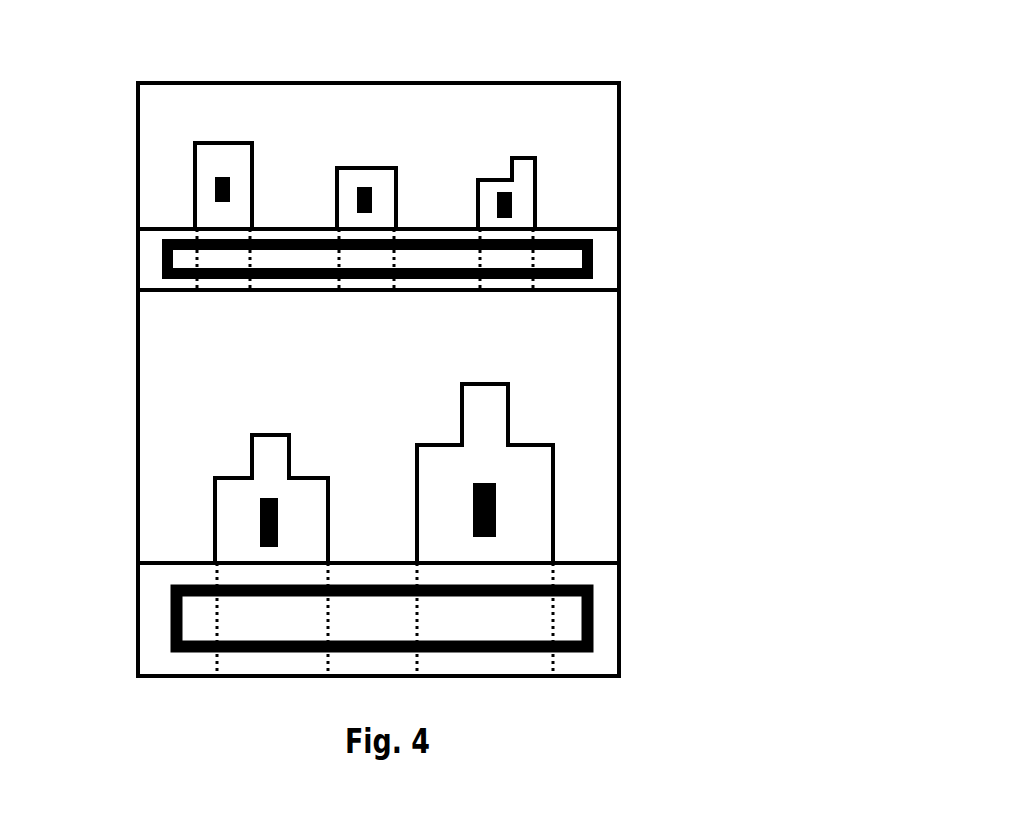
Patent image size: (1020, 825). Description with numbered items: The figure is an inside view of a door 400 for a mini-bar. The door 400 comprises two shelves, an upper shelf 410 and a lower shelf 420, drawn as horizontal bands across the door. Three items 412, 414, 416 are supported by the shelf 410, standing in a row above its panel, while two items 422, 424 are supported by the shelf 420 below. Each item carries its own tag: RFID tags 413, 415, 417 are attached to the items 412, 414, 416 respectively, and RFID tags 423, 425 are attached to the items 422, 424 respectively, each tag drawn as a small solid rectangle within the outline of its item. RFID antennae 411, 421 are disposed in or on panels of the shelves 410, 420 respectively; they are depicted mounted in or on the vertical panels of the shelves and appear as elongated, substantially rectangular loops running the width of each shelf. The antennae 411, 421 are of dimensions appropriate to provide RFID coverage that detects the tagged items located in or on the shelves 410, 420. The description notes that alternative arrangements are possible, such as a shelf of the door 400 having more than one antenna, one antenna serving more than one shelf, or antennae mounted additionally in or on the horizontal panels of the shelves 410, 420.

The door 400 is at (820, 37).
The shelf 410 is at (593, 290).
The RFID antenna 411 is at (163, 253).
The item 412 is at (207, 142).
The RFID tag 413 is at (230, 188).
The item 414 is at (365, 168).
The RFID tag 415 is at (370, 203).
The item 416 is at (518, 158).
The RFID tag 417 is at (510, 207).
The shelf 420 is at (590, 558).
The RFID antenna 421 is at (170, 618).
The item 422 is at (272, 433).
The RFID tag 423 is at (278, 525).
The item 424 is at (482, 385).
The RFID tag 425 is at (496, 505).